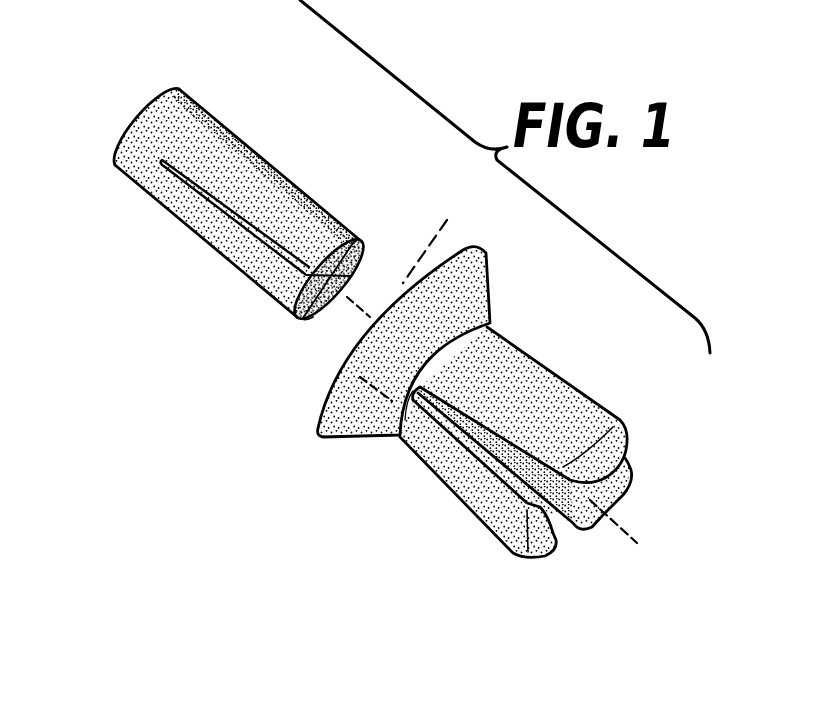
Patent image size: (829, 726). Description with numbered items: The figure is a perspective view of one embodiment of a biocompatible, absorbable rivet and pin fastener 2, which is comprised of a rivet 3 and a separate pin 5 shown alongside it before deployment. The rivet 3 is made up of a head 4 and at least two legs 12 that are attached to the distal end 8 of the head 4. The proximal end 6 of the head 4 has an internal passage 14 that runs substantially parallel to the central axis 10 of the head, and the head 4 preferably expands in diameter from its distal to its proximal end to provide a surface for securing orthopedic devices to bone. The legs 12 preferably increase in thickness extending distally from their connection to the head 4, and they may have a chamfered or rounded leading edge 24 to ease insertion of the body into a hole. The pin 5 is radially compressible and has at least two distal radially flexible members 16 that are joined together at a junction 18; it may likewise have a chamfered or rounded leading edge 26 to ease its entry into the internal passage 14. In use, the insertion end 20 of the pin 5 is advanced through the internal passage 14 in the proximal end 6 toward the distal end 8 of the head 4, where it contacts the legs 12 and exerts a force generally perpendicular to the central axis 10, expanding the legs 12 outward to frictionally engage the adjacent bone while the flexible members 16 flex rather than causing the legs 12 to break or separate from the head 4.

The rivet and pin fastener 2 is at (237, 432).
The rivet 3 is at (543, 340).
The head 4 is at (360, 450).
The pin 5 is at (130, 187).
The proximal end 6 is at (323, 387).
The distal end 8 is at (407, 393).
The central axis 10 is at (625, 535).
The legs 12 is at (627, 497).
The internal passage 14 is at (412, 298).
The distal radially flexible members 16 is at (307, 250).
The junction 18 is at (136, 117).
The insertion end 20 is at (358, 280).
The leading edge 24 is at (517, 557).
The leading edge 26 is at (291, 317).